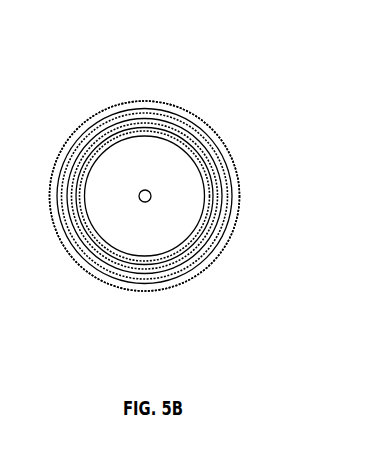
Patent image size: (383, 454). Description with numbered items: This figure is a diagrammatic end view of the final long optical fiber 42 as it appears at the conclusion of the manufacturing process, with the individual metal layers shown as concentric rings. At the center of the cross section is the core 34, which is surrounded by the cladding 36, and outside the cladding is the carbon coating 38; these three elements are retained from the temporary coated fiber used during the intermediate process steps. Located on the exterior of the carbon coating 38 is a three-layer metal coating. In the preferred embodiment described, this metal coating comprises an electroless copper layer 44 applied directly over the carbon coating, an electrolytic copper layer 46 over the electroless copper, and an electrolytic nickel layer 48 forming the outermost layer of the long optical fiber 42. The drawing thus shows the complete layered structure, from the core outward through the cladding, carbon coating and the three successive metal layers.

The core 34 is at (140, 202).
The cladding 36 is at (175, 167).
The carbon coating 38 is at (175, 270).
The long optical fiber 42 is at (104, 72).
The electroless copper layer 44 is at (157, 282).
The electrolytic copper layer 46 is at (221, 247).
The electrolytic nickel layer 48 is at (228, 150).